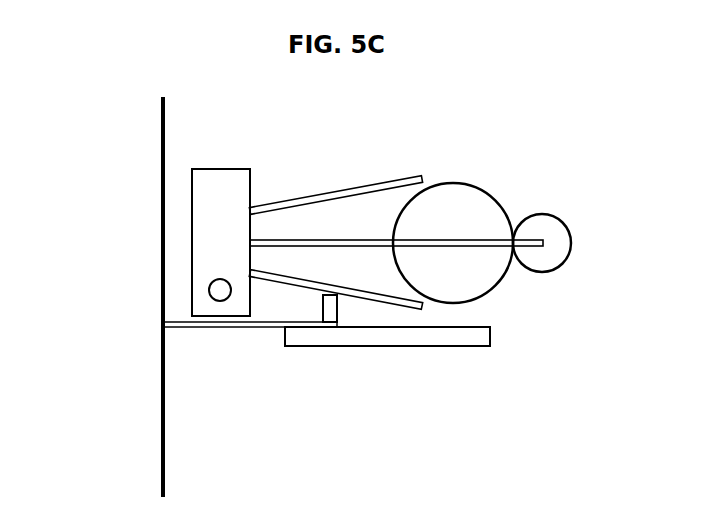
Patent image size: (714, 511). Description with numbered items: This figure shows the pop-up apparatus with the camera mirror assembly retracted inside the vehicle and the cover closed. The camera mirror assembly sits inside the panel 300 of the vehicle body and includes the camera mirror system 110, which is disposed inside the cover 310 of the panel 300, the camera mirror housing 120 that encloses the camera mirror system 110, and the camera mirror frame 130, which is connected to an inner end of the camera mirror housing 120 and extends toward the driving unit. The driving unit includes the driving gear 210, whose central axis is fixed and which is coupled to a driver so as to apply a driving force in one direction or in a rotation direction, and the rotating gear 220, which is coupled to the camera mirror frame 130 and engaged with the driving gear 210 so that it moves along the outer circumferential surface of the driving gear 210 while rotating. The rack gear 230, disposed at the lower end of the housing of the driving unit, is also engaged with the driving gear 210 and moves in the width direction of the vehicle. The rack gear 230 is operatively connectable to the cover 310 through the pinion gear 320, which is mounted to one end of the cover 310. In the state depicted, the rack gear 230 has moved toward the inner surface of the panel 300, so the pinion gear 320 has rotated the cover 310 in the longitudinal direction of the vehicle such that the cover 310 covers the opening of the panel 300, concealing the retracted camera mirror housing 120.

The camera mirror system 110 is at (216, 300).
The camera mirror housing 120 is at (239, 153).
The camera mirror frame 130 is at (327, 241).
The driving gear 210 is at (500, 282).
The rotating gear 220 is at (545, 213).
The rack gear 230 is at (420, 347).
The panel 300 is at (162, 423).
The cover 310 is at (162, 273).
The pinion gear 320 is at (327, 310).